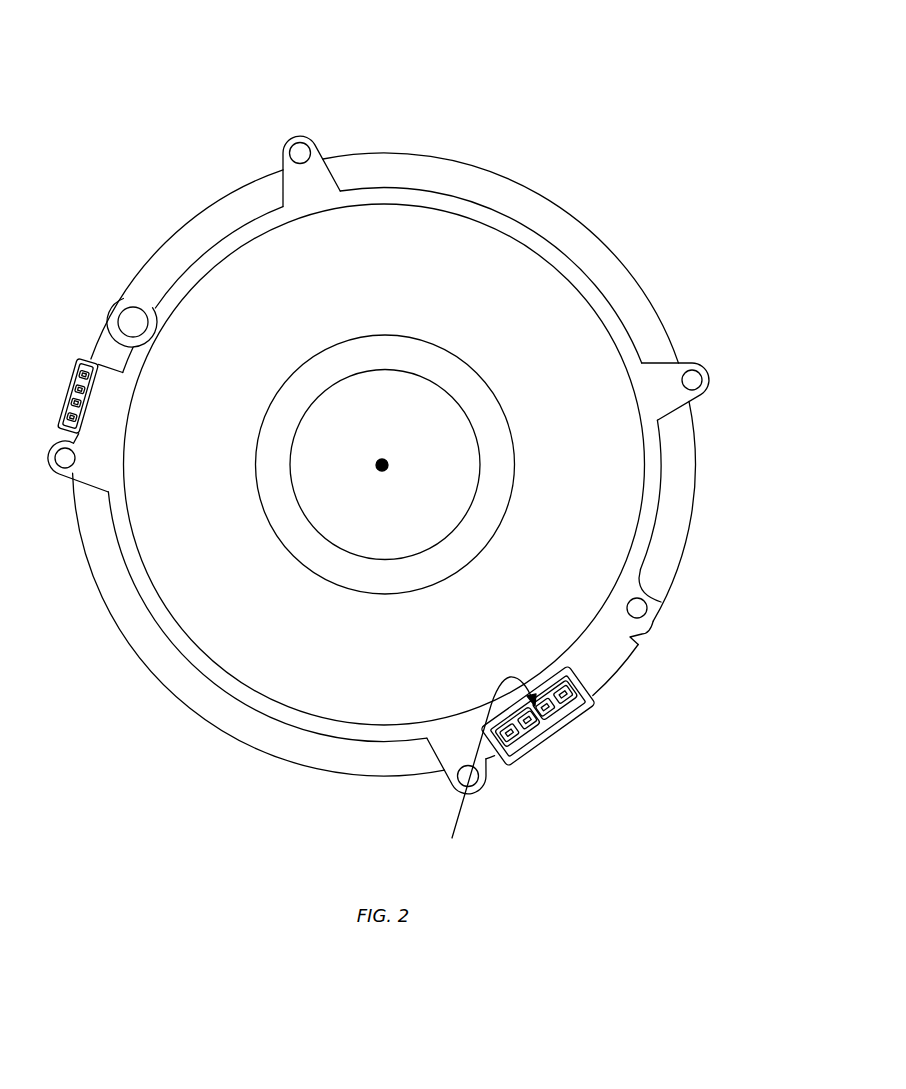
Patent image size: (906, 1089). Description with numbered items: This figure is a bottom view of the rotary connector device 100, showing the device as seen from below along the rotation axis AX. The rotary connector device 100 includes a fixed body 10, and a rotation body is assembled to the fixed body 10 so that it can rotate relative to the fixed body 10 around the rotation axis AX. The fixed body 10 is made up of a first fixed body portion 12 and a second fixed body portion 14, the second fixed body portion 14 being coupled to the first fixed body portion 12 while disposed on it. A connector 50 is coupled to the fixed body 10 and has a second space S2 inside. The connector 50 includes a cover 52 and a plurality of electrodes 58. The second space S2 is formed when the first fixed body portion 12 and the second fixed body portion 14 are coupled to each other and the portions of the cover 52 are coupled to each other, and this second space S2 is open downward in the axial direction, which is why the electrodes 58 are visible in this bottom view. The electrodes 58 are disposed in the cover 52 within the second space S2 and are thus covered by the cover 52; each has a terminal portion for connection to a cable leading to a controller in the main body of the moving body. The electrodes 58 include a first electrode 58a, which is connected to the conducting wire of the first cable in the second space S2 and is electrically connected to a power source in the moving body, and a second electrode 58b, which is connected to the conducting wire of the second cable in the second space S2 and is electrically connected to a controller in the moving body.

The rotary connector device 100 is at (410, 440).
The fixed body 10 is at (378, 413).
The second fixed body portion 14 is at (421, 189).
The first fixed body portion 12 is at (434, 222).
The rotation axis AX is at (386, 461).
The connector 50 is at (626, 744).
The cover 52 is at (515, 757).
The electrodes 58 is at (603, 731).
The first electrode 58a is at (565, 710).
The second electrode 58b is at (517, 719).
The second space S2 is at (490, 763).